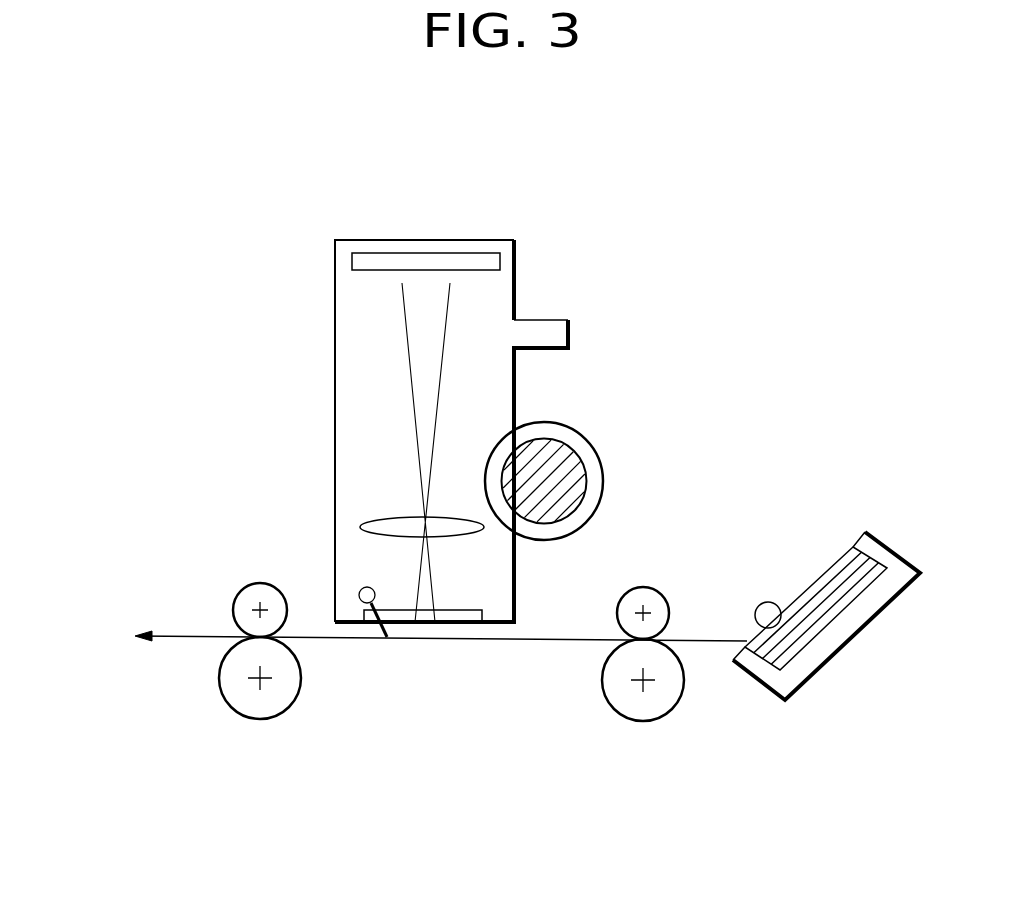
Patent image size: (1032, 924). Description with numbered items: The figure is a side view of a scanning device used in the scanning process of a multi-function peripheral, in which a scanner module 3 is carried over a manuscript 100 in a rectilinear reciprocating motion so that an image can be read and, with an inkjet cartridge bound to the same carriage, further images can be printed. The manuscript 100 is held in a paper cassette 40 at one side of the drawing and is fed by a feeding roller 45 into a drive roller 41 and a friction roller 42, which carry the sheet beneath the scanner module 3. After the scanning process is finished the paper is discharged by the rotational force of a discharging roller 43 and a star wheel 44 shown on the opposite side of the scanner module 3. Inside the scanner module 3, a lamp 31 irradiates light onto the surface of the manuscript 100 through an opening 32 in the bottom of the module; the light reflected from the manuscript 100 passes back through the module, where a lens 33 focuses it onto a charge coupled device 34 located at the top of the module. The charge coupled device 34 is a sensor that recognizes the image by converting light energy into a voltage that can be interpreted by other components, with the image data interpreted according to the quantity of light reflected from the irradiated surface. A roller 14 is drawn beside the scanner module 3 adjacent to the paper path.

The scanner module 3 is at (372, 240).
The charge coupled device 34 is at (493, 263).
The lens 33 is at (387, 517).
The lamp 31 is at (360, 590).
The exposure window 32 is at (457, 615).
The drum roller 14 is at (562, 455).
The manuscript 100 is at (808, 490).
The paper cassette 40 is at (857, 618).
The drive roller 41 is at (662, 698).
The friction roller 42 is at (641, 598).
The feed roller 43 is at (228, 686).
The star wheel 44 is at (250, 600).
The feeding roller 45 is at (766, 602).